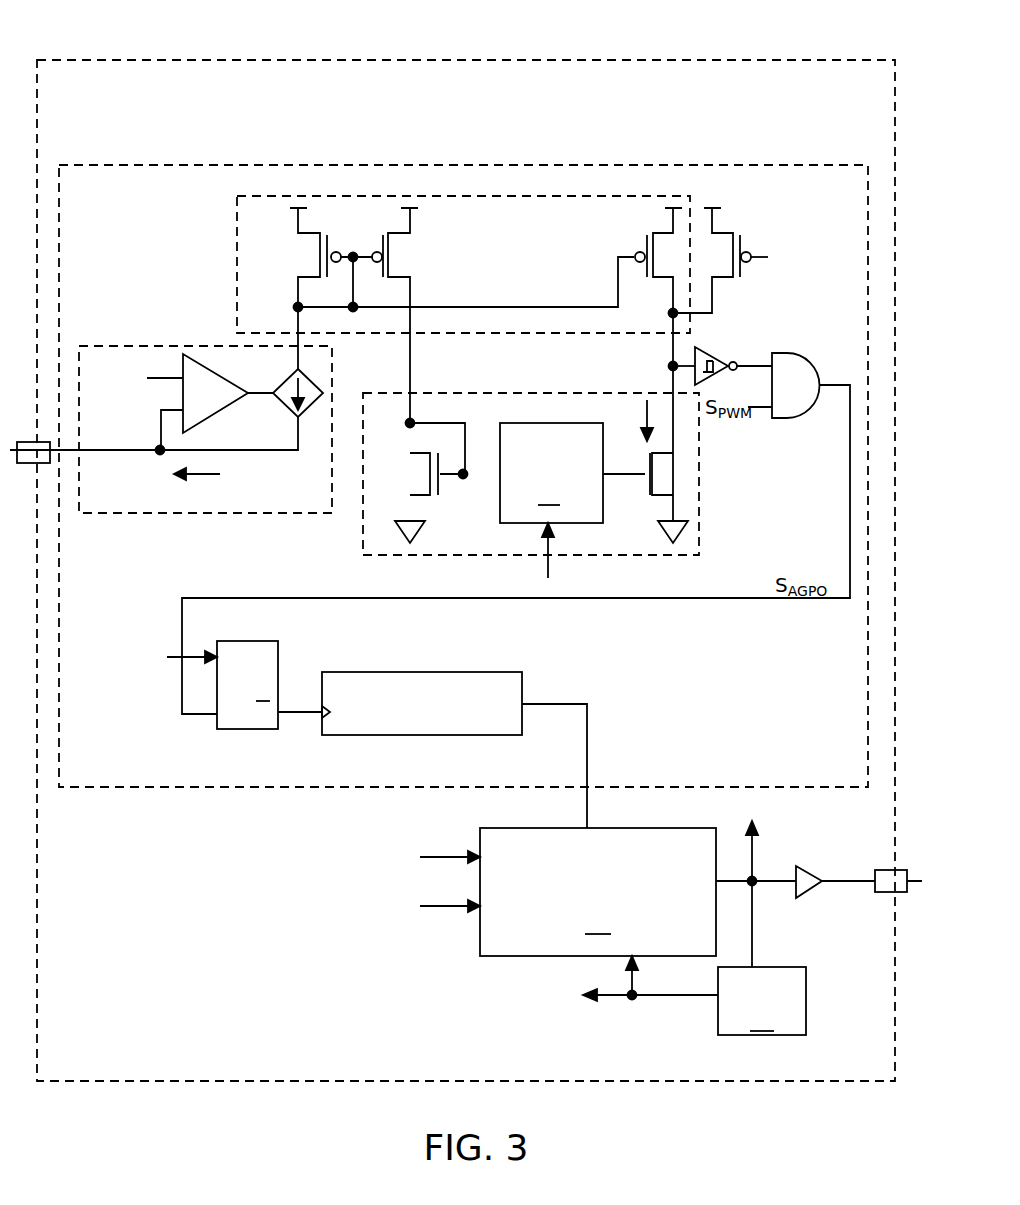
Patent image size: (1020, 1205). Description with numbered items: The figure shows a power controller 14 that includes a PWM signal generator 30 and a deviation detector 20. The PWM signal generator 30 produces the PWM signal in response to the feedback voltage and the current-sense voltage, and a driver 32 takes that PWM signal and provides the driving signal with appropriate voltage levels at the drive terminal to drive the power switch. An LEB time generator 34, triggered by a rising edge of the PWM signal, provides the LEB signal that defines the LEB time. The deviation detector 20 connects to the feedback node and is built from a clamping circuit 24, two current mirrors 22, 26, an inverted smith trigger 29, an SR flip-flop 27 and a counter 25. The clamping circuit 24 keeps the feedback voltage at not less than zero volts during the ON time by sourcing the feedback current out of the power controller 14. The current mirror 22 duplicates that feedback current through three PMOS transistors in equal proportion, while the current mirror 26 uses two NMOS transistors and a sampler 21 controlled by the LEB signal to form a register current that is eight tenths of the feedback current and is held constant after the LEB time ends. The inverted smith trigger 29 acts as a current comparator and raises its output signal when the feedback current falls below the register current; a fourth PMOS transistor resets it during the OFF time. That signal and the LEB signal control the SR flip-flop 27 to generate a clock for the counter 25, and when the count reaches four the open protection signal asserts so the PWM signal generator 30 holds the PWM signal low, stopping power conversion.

The power controller 14 is at (192, 60).
The deviation detector 20 is at (172, 165).
The current mirror 22 is at (236, 262).
The clamping circuit 24 is at (196, 346).
The current mirror 26 is at (564, 465).
The sampler 21 is at (551, 473).
The inverted smith trigger 29 is at (721, 354).
The SR flip-flop 27 is at (247, 730).
The counter 25 is at (432, 735).
The PWM signal generator 30 is at (598, 886).
The driver 32 is at (855, 890).
The LEB time generator 34 is at (673, 958).